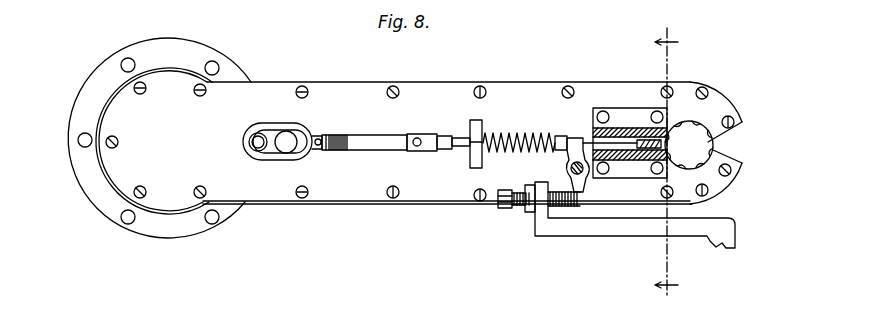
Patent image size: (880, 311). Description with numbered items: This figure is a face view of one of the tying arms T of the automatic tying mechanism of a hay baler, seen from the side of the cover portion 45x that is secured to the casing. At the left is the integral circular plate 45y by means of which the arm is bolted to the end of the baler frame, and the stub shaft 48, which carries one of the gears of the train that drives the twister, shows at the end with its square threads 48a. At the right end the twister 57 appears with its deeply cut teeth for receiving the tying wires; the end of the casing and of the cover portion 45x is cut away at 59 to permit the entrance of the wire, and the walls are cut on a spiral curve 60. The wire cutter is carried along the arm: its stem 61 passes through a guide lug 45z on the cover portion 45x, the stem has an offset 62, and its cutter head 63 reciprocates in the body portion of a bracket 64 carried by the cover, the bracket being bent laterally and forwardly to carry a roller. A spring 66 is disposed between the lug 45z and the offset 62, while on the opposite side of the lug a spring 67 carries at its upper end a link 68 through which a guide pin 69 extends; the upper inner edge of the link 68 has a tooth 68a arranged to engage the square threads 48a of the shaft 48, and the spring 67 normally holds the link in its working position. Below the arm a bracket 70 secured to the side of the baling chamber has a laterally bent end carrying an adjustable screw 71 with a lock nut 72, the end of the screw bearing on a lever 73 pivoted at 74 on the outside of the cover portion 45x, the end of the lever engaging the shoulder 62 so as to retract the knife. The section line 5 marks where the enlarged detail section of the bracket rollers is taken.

The integral circular plate 45y is at (180, 52).
The cover portion 45x is at (273, 83).
The tying arm T is at (328, 88).
The guide lug 45z is at (477, 139).
The stub shaft 48 is at (258, 137).
The square threads 48a is at (262, 157).
The tooth 68a is at (250, 142).
The link 68 is at (295, 161).
The guide pin 69 is at (295, 136).
The spring 67 is at (343, 139).
The stem of the wire cutter 61 is at (464, 139).
The spring 66 is at (512, 136).
The offset 62 is at (557, 139).
The lever 73 is at (584, 186).
The pivot 74 is at (570, 168).
The adjustable screw 71 is at (517, 209).
The lock nut 72 is at (530, 214).
The bracket 70 is at (598, 226).
The bracket 64 is at (615, 129).
The cutter head 63 is at (647, 139).
The spiral curve 60 is at (682, 121).
The twister 57 is at (702, 123).
The cut-away portion 59 is at (722, 148).
The section line 5- 5 is at (666, 160).